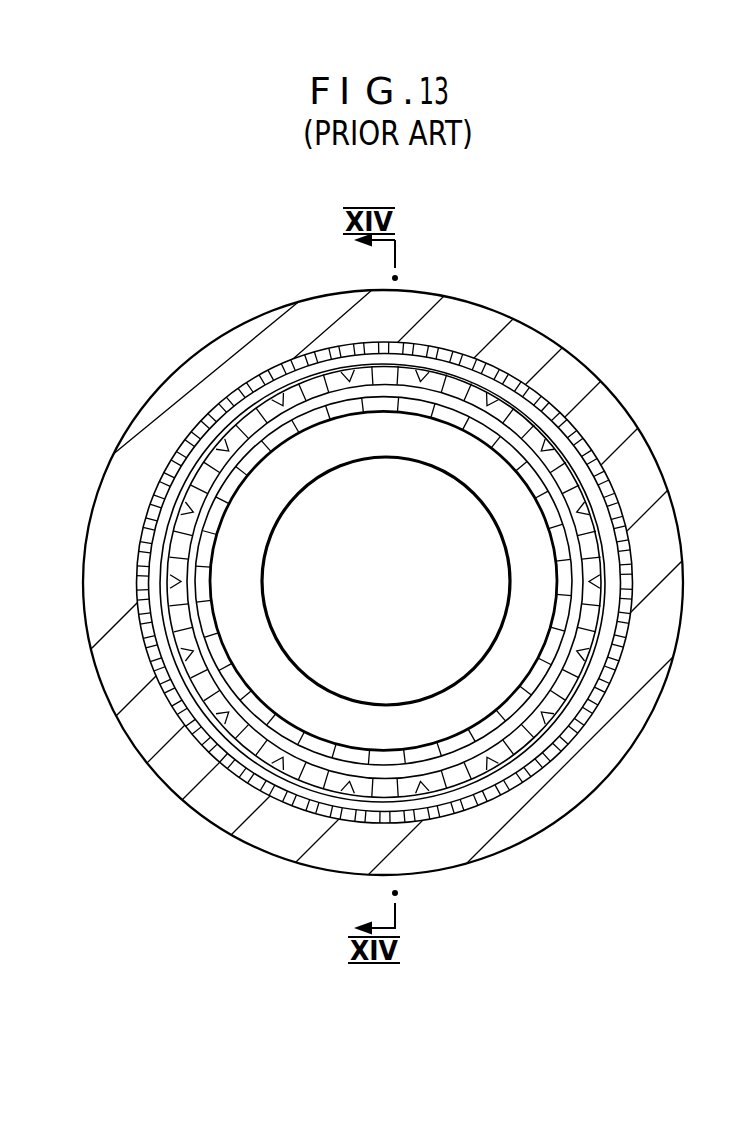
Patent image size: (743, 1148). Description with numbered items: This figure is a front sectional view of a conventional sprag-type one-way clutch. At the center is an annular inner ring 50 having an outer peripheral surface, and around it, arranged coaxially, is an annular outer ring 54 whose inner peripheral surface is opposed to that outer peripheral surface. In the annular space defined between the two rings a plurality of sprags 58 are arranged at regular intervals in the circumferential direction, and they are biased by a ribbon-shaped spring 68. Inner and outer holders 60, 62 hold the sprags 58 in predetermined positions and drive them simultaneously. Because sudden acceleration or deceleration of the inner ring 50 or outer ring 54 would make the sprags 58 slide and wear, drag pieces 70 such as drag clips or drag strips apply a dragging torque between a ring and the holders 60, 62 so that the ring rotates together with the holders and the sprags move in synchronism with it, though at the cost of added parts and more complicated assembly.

The annular inner ring 50 is at (337, 455).
The annular outer ring 54 is at (282, 327).
The sprags 58 is at (228, 403).
The inner holder 60 is at (433, 397).
The outer holder 62 is at (500, 389).
The ribbon-shaped spring 68 is at (432, 368).
The drag pieces 70 is at (568, 425).